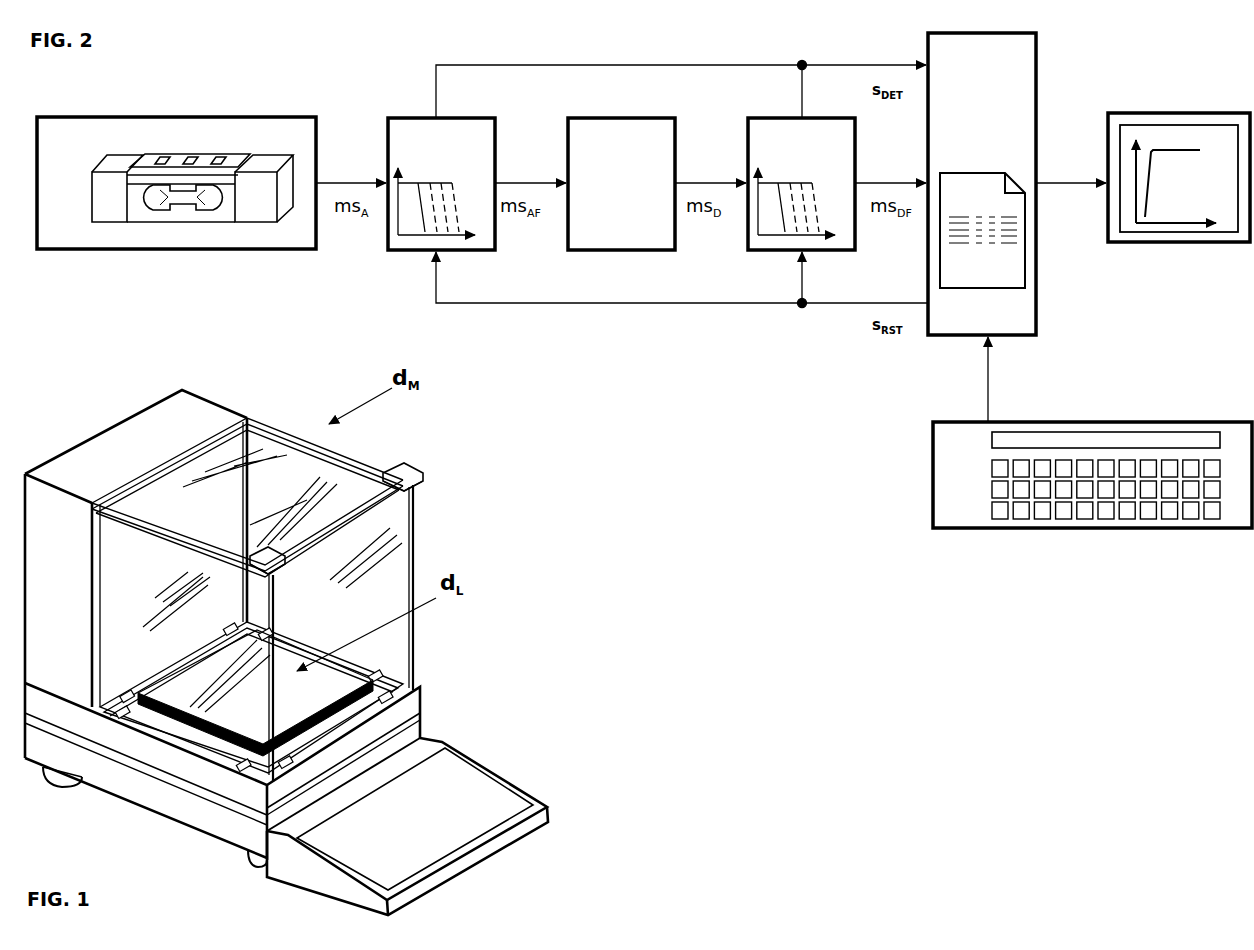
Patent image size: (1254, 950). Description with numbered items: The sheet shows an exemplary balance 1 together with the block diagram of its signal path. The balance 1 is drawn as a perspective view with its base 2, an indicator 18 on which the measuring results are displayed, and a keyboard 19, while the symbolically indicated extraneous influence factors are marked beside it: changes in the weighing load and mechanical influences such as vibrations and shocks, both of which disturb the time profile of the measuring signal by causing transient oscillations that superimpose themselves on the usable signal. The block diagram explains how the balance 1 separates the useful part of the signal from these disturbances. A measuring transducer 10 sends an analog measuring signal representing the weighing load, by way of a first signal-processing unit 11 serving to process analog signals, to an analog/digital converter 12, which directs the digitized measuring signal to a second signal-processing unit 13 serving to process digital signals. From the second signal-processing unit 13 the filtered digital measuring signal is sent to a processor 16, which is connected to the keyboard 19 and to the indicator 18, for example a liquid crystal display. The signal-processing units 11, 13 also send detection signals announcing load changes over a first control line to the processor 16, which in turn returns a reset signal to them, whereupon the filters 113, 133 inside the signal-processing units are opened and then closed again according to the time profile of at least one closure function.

In FIG. 1, the balance 1 is at (66, 423).
In FIG. 1, the base housing 2 is at (141, 800).
In FIG. 2, the measuring transducer 10 is at (176, 183).
In FIG. 2, the first signal-processing unit 11 is at (441, 184).
In FIG. 2, the filter 113 is at (441, 194).
In FIG. 2, the analog/digital converter 12 is at (621, 184).
In FIG. 2, the second signal-processing unit 13 is at (801, 184).
In FIG. 2, the filter 133 is at (802, 194).
In FIG. 2, the processor 16 is at (982, 184).
In FIG. 2, the indicator 18 is at (1179, 177).
In FIG. 1, the indicator 18 is at (118, 550).
In FIG. 2, the keyboard 19 is at (1092, 432).
In FIG. 1, the keyboard 19 is at (442, 798).